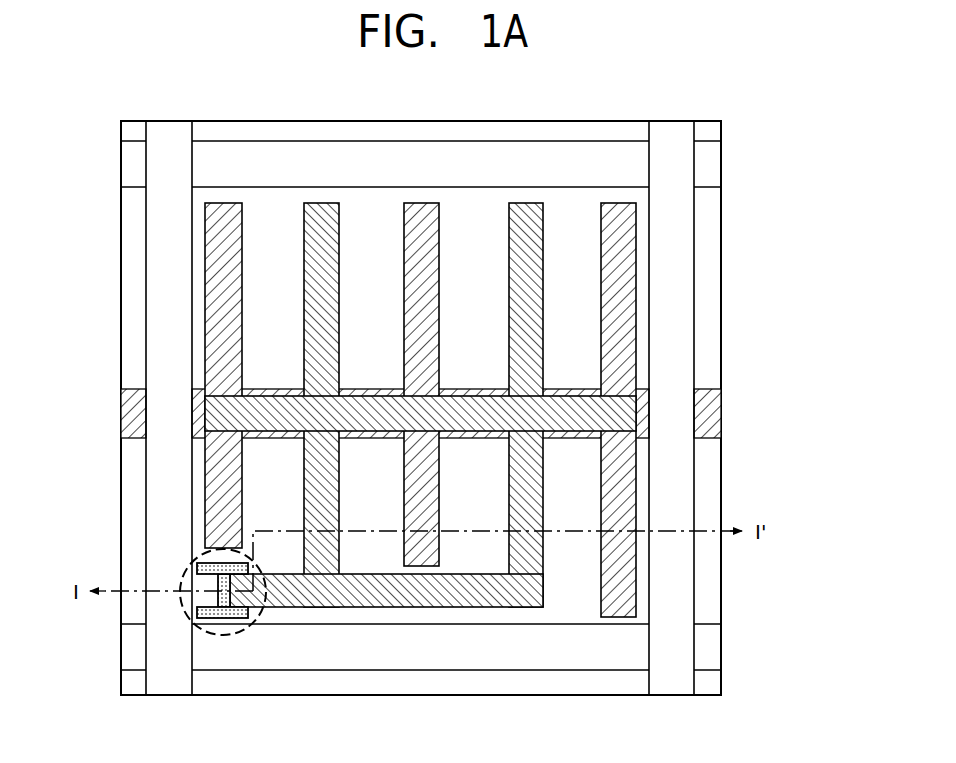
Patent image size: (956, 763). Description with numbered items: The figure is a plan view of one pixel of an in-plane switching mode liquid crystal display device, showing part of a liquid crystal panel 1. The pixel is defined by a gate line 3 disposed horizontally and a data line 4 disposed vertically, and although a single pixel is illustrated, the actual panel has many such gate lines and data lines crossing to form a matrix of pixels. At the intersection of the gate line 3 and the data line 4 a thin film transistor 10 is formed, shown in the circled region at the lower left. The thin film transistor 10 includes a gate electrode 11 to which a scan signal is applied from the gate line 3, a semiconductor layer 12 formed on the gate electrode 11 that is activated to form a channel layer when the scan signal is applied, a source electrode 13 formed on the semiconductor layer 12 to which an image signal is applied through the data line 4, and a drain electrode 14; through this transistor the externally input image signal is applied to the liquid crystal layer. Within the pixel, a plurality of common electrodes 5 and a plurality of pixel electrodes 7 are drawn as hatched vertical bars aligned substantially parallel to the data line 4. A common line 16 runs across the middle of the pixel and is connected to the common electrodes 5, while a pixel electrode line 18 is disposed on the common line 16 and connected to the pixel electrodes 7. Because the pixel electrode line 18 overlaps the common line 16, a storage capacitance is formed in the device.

The liquid crystal panel 1 is at (728, 150).
The gate line 3 is at (505, 654).
The data line 4 is at (170, 686).
The common electrode 5 is at (223, 202).
The pixel electrode 7 is at (320, 202).
The thin film transistor 10 is at (173, 625).
The gate electrode 11 is at (217, 562).
The semiconductor layer 12 is at (224, 612).
The source electrode 13 is at (202, 584).
The drain electrode 14 is at (240, 598).
The common line 16 is at (133, 405).
The pixel electrode line 18 is at (620, 411).